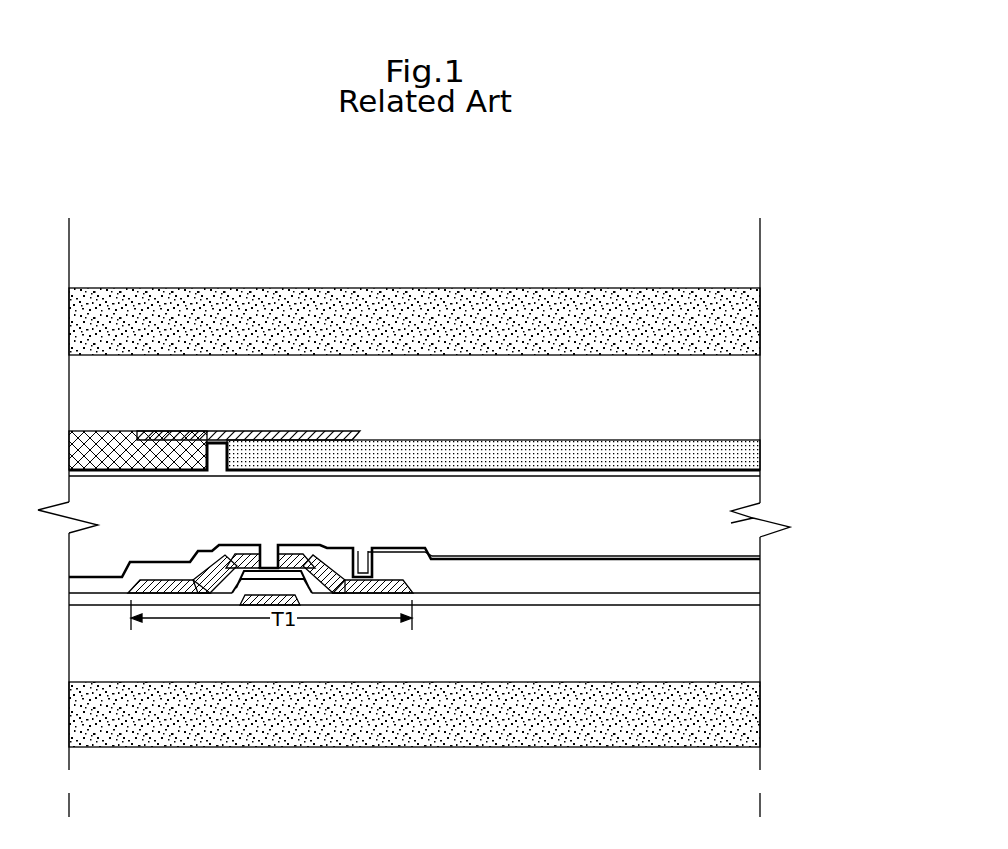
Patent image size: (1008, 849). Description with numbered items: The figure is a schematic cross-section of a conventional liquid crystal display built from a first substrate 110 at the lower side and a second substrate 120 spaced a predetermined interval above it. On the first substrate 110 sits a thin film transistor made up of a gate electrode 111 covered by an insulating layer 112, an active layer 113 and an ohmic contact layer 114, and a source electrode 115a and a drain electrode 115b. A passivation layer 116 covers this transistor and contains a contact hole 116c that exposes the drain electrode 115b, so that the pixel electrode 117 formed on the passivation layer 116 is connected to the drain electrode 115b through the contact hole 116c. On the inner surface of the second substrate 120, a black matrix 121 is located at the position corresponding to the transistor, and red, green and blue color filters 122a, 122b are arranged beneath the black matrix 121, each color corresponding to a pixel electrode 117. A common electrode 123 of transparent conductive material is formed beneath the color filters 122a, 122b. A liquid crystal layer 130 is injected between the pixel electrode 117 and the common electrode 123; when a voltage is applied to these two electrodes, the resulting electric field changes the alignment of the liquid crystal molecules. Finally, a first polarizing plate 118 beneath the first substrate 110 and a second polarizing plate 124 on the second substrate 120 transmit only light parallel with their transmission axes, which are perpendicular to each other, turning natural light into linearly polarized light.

The first substrate 110 is at (745, 641).
The gate electrode 111 is at (270, 607).
The insulating layer 112 is at (762, 597).
The active layer 113 is at (307, 588).
The ohmic contact layer 114 is at (217, 577).
The source electrode 115a is at (243, 560).
The drain electrode 115b is at (298, 558).
The passivation layer 116 is at (148, 568).
The contact hole 116c is at (366, 547).
The pixel electrode 117 is at (510, 557).
The first polarizing plate 118 is at (735, 716).
The second substrate 120 is at (352, 375).
The black matrix 121 is at (215, 431).
The color filter 122a is at (459, 445).
The color filter 122b is at (104, 440).
The common electrode 123 is at (762, 466).
The second polarizing plate 124 is at (555, 325).
The liquid crystal layer 130 is at (765, 516).